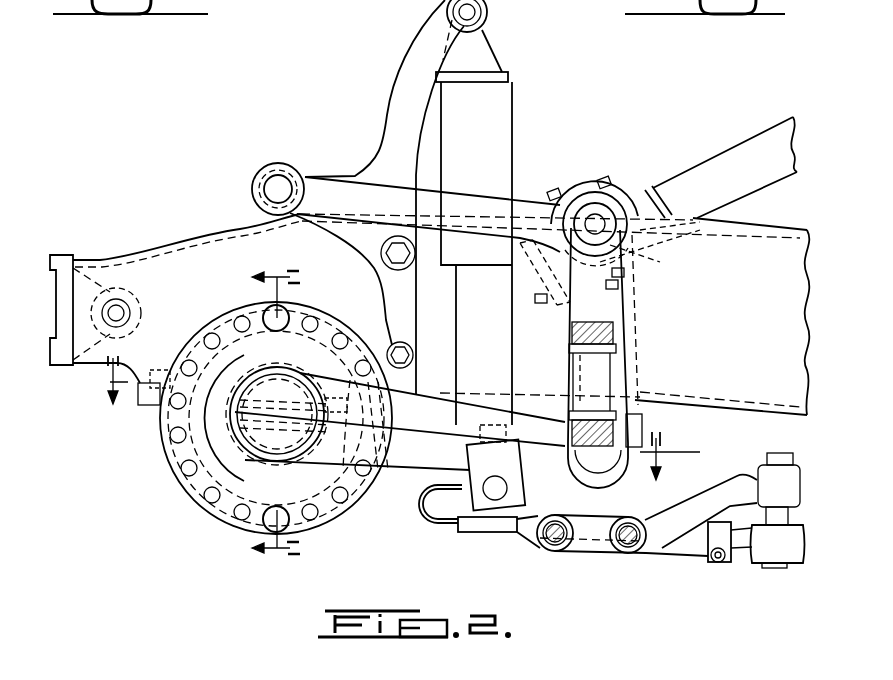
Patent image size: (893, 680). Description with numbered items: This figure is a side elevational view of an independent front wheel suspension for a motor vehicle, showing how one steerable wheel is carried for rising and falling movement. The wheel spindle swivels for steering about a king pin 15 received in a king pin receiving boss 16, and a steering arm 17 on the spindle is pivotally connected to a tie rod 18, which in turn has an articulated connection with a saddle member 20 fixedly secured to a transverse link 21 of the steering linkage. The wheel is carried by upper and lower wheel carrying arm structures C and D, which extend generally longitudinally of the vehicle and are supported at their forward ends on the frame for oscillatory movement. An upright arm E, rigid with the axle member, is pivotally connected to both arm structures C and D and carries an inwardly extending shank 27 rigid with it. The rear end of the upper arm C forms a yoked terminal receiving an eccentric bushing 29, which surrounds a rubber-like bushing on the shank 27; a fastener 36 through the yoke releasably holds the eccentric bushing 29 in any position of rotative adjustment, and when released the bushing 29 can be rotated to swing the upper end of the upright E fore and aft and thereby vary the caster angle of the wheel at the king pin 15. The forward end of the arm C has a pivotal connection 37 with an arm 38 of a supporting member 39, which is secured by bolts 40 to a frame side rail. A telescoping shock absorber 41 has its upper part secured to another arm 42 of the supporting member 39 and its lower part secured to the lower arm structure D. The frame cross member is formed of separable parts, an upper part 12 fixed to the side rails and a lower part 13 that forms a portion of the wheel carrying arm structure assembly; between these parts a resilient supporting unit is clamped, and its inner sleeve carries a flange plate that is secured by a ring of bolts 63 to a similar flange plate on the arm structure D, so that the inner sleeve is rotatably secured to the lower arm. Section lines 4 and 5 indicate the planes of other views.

The section line 4- 4 is at (383, 420).
The section line 5- 5 is at (276, 422).
The upper part of cross member 12 is at (137, 392).
The lower part of cross member 13 is at (150, 400).
The king pin 15 is at (618, 345).
The king pin receiving boss 16 is at (608, 378).
The steering arm 17 is at (745, 478).
The tie rod 18 is at (708, 556).
The saddle member 20 is at (433, 521).
The transverse link 21 is at (445, 513).
The shank 27 is at (612, 213).
The eccentric bushing 29 is at (641, 261).
The fastener 36 is at (652, 188).
The pivotal connection 37 is at (285, 178).
The arm of supporting member 38 is at (332, 230).
The supporting member 39 is at (382, 108).
The bolts 40 is at (398, 345).
The shock absorber 41 is at (515, 121).
The arm of supporting member 42 is at (440, 36).
The bolts 63 is at (288, 310).
The upper wheel carrying arm structure C is at (527, 200).
The lower wheel carrying arm structure D is at (398, 470).
The upright arm E is at (620, 303).